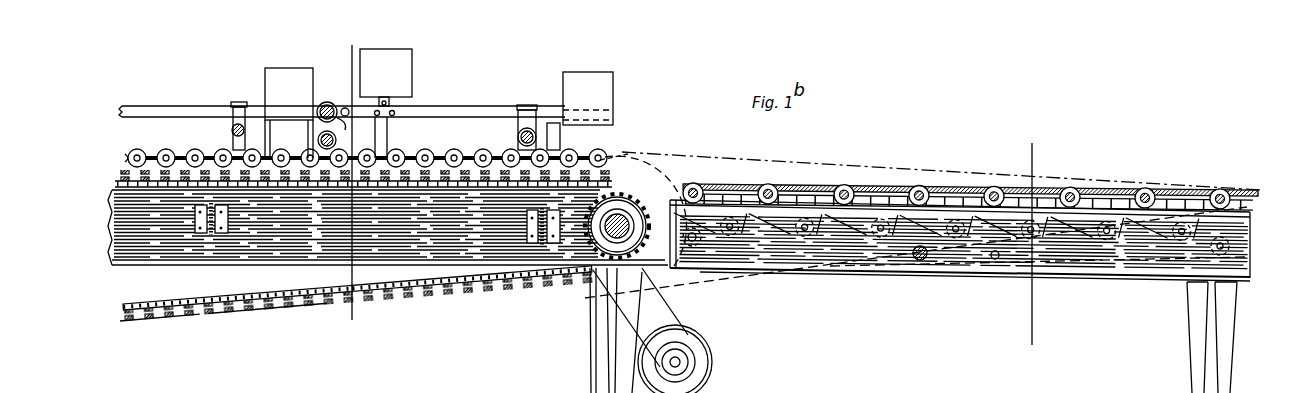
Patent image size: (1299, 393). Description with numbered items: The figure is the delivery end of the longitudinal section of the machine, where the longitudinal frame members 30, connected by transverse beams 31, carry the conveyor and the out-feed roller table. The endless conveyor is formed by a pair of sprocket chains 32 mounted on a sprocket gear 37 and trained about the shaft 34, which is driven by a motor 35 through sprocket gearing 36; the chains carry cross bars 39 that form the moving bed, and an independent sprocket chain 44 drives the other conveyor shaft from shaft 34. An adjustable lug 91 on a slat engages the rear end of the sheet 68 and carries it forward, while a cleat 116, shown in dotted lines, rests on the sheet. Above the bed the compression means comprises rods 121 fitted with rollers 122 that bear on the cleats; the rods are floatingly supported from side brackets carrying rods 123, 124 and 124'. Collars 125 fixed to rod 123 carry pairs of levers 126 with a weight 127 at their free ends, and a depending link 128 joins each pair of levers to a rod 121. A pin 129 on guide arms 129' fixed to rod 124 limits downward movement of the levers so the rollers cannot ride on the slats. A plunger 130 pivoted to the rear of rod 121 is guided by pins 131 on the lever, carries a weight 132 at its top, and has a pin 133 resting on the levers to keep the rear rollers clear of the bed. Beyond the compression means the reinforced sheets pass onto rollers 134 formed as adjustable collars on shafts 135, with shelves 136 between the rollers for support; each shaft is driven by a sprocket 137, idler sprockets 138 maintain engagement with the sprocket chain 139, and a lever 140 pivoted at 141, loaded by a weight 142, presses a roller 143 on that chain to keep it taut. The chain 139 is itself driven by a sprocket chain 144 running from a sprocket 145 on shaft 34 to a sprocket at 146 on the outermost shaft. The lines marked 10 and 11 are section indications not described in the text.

The conveyor section 10 is at (368, 57).
The section line 11 is at (1045, 141).
The longitudinal frame member 30 is at (966, 280).
The transverse beam 31 is at (530, 248).
The sprocket chain 32 is at (168, 297).
The shaft 34 is at (620, 220).
The motor 35 is at (686, 361).
The sprocket gearing 36 is at (688, 306).
The sprocket gear 37 is at (578, 252).
The cross bar 39 is at (382, 288).
The independent sprocket chain 44 is at (227, 314).
The sheet 68 is at (957, 182).
The lug 91 is at (417, 150).
The cleat 116 is at (927, 177).
The rod 121 is at (151, 150).
The roller 122 is at (137, 149).
The rod 123 is at (320, 112).
The rod 124 is at (375, 110).
The rod 124' is at (306, 138).
The collar 125 is at (330, 104).
The lever 126 is at (464, 106).
The weight 127 is at (608, 98).
The depending link 128 is at (560, 141).
The pin 129 is at (506, 118).
The guide arm 129' is at (537, 90).
The plunger 130 is at (377, 165).
The pin 131 is at (395, 112).
The weight 132 is at (400, 56).
The pin 133 is at (385, 97).
The roller 134 is at (358, 131).
The shaft 135 is at (1150, 196).
The shelf 136 is at (1115, 188).
The sprocket 137 is at (1069, 195).
The idler sprocket 138 is at (1110, 232).
The sprocket chain 139 is at (1166, 262).
The lever 140 is at (984, 265).
The pivot 141 is at (996, 261).
The weight 142 is at (848, 263).
The roller 143 is at (906, 266).
The sprocket chain 144 is at (764, 283).
The sprocket 145 is at (631, 153).
The sprocket 146 is at (1220, 190).